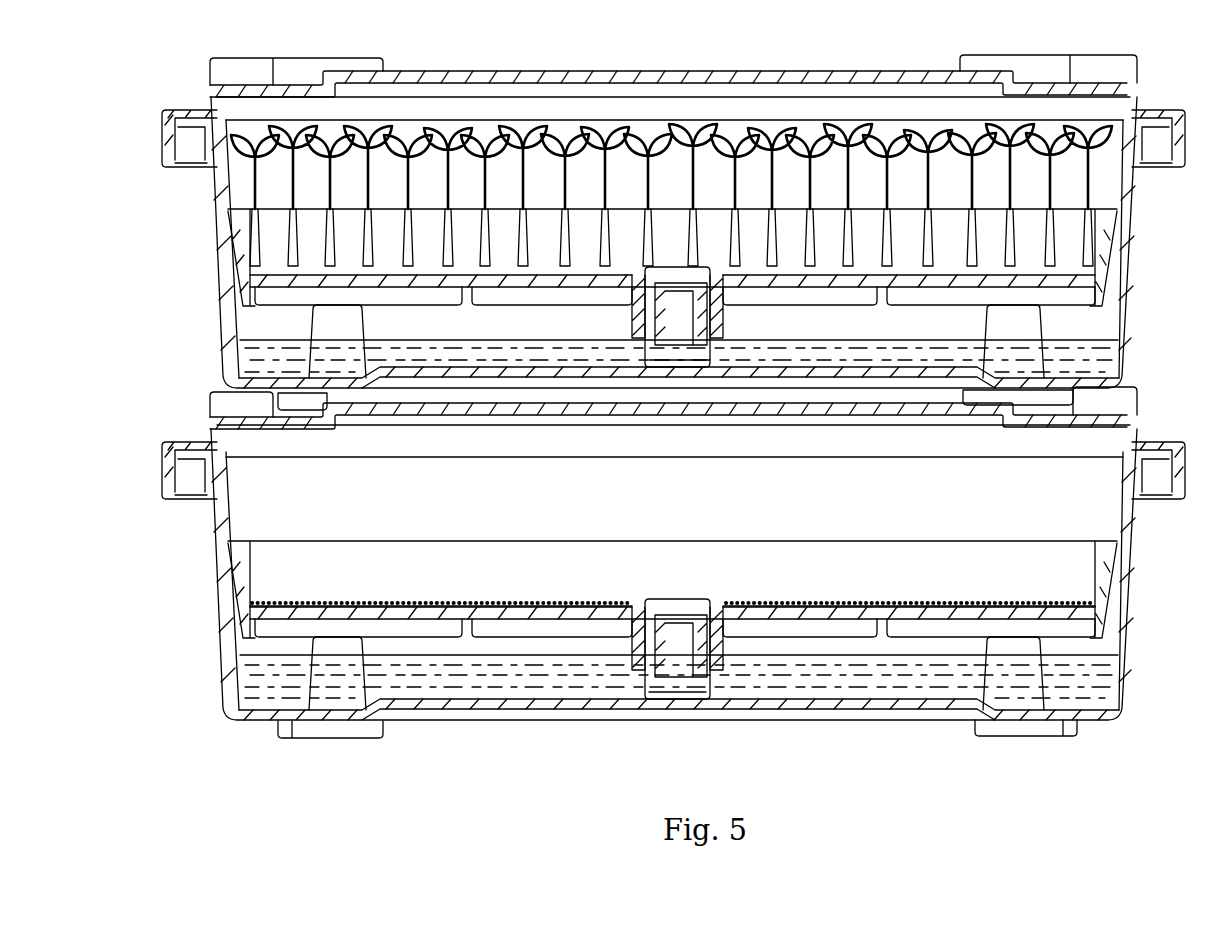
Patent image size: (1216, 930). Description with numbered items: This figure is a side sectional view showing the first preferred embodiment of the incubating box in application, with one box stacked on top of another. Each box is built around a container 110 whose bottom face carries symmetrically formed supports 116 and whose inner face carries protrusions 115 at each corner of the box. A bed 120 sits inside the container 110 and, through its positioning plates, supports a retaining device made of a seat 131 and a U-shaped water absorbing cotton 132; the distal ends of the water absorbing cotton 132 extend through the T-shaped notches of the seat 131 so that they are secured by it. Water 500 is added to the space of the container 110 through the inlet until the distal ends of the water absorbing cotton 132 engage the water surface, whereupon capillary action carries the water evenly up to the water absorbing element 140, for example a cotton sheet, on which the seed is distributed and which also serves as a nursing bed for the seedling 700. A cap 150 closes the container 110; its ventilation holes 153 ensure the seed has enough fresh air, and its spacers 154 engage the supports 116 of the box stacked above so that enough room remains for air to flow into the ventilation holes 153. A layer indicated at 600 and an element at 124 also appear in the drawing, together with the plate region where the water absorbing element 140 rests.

The container 110 is at (686, 585).
The protrusions 115 is at (676, 716).
The supports 116 is at (1052, 393).
The bed 120 is at (719, 589).
The perforated plate 124 is at (672, 596).
The seat 131 is at (716, 684).
The water absorbing cotton 132 is at (670, 607).
The water absorbing element 140 is at (672, 577).
The cap 150 is at (705, 435).
The ventilation holes 153 is at (668, 449).
The spacers 154 is at (703, 395).
The water 500 is at (679, 710).
The growing medium 600 is at (673, 574).
The seedling 700 is at (960, 138).